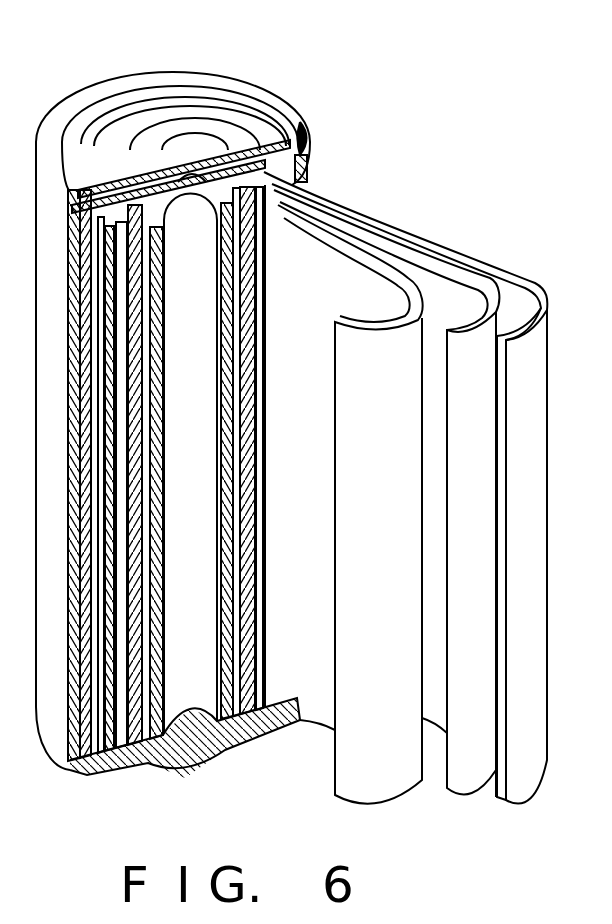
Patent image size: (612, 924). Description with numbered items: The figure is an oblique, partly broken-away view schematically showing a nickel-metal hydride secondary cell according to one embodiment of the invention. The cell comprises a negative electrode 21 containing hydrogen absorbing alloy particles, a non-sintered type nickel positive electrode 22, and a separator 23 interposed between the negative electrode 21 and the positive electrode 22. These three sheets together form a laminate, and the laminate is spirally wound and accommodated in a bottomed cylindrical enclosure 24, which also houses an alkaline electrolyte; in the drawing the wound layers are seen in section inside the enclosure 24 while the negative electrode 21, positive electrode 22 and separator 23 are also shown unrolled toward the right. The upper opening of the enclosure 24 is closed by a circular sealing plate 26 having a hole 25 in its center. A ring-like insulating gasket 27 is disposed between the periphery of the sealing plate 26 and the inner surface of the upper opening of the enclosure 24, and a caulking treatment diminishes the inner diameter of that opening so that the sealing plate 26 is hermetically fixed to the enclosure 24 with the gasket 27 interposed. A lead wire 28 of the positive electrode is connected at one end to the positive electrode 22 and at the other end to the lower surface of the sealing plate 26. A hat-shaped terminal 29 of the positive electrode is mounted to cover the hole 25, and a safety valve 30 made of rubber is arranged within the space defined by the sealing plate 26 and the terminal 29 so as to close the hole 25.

The negative electrode 21 is at (540, 287).
The non-sintered type nickel positive electrode 22 is at (463, 290).
The separator 23 is at (486, 280).
The bottomed cylindrical enclosure 24 is at (297, 157).
The hole 25 is at (245, 113).
The circular sealing plate 26 is at (290, 110).
The ring-like insulating gasket 27 is at (307, 127).
The lead wire 28 is at (152, 165).
The hat-shaped terminal 29 is at (165, 198).
The safety valve 30 is at (195, 125).